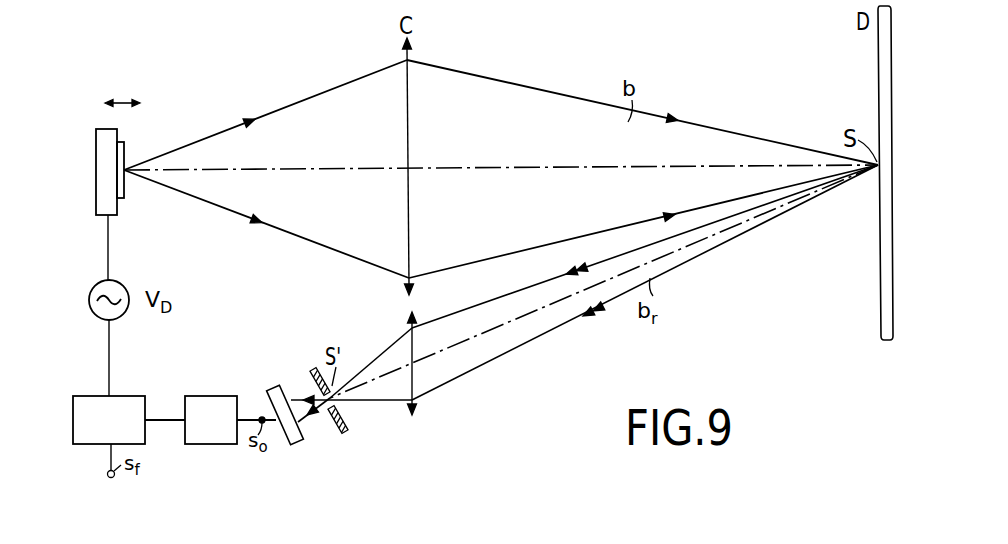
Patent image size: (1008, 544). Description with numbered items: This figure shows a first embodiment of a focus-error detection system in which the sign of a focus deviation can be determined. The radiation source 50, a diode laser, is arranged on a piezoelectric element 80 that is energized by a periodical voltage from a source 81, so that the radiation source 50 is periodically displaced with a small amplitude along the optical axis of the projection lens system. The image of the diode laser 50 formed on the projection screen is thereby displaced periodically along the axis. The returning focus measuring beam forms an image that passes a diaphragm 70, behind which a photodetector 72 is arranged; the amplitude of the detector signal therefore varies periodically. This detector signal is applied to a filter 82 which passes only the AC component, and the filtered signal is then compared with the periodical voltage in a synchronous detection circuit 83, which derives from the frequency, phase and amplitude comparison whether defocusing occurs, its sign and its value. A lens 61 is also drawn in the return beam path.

The radiation source 50 is at (123, 150).
The piezoelectric element 80 is at (96, 150).
The source of periodical voltage 81 is at (90, 298).
The filter 82 is at (212, 445).
The synchronous detection circuit 83 is at (92, 445).
The photodetector 72 is at (302, 445).
The diaphragm 70 is at (345, 433).
The lens 61 is at (413, 378).